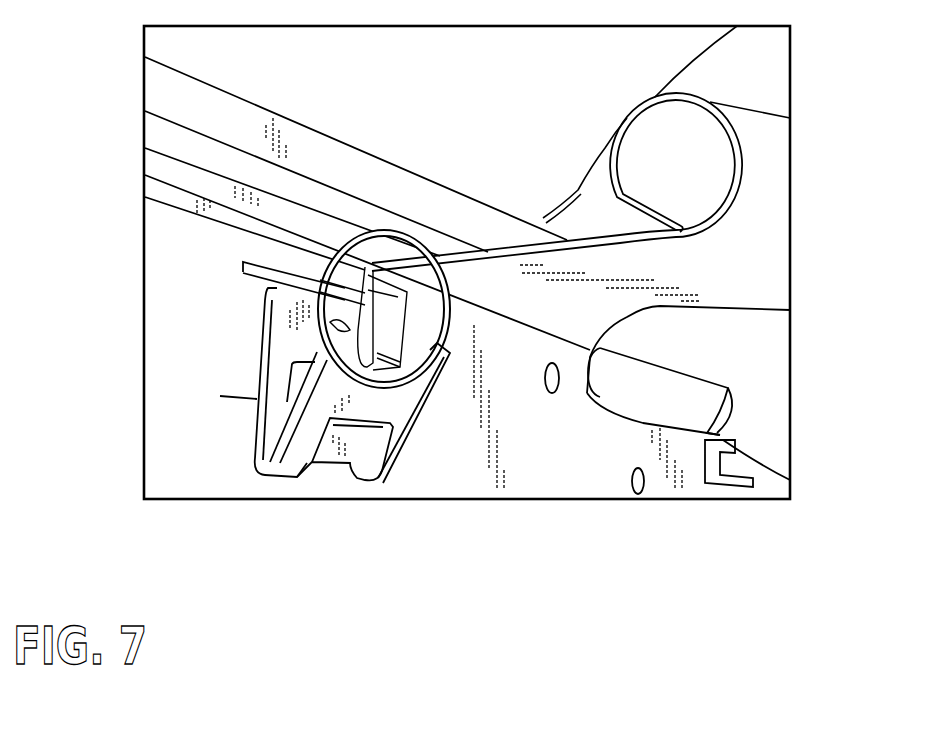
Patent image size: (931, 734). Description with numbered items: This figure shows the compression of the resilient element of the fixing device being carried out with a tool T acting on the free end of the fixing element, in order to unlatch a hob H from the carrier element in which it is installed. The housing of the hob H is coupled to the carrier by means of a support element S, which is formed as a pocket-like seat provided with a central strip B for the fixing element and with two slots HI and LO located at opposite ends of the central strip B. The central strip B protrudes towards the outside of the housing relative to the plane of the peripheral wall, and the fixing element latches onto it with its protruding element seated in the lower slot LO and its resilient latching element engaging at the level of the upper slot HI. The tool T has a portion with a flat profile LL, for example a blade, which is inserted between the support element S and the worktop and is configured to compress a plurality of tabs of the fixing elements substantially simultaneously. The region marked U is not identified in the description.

The hob H is at (129, 471).
The upper slot HI is at (239, 270).
The central strip B is at (344, 385).
The support element S is at (217, 411).
The lower slot LO is at (248, 403).
The flat profile LL is at (525, 290).
The upper panel U is at (500, 150).
The tool T is at (751, 196).